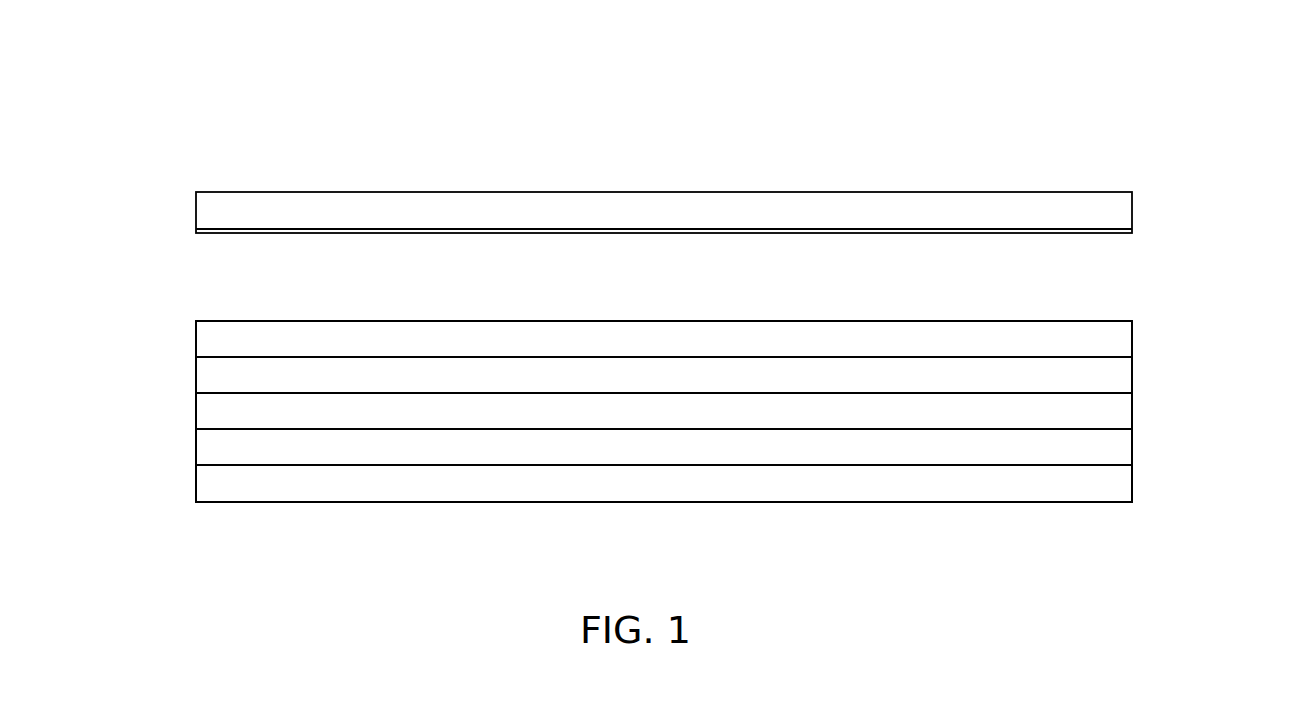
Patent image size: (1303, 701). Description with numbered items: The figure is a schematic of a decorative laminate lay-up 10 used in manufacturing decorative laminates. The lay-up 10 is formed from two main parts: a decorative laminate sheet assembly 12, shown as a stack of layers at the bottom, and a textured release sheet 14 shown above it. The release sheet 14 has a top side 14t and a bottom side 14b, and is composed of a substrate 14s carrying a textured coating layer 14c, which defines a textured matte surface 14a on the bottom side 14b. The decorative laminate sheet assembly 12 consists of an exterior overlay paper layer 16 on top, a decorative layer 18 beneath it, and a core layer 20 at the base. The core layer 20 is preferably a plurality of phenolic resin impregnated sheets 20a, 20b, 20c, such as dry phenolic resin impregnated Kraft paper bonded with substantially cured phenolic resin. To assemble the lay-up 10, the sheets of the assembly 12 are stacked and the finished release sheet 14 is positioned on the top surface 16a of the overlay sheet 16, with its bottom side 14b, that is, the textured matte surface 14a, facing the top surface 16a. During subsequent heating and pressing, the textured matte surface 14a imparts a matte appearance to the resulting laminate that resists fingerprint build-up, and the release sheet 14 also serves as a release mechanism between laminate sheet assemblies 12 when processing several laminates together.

The decorative laminate lay-up 10 is at (1188, 126).
The decorative laminate sheet assembly 12 is at (183, 512).
The textured release sheet 14 is at (1132, 207).
The textured matte surface 14a is at (851, 235).
The bottom side 14b is at (1105, 233).
The textured coating layer 14c is at (397, 235).
The substrate 14s is at (365, 207).
The top side 14t is at (790, 191).
The overlay paper layer 16 is at (664, 339).
The top surface 16a is at (618, 319).
The decorative layer 18 is at (664, 375).
The core layer 20 is at (1147, 390).
The phenolic resin impregnated sheet 20a is at (664, 483).
The phenolic resin impregnated sheet 20b is at (664, 447).
The phenolic resin impregnated sheet 20c is at (664, 411).